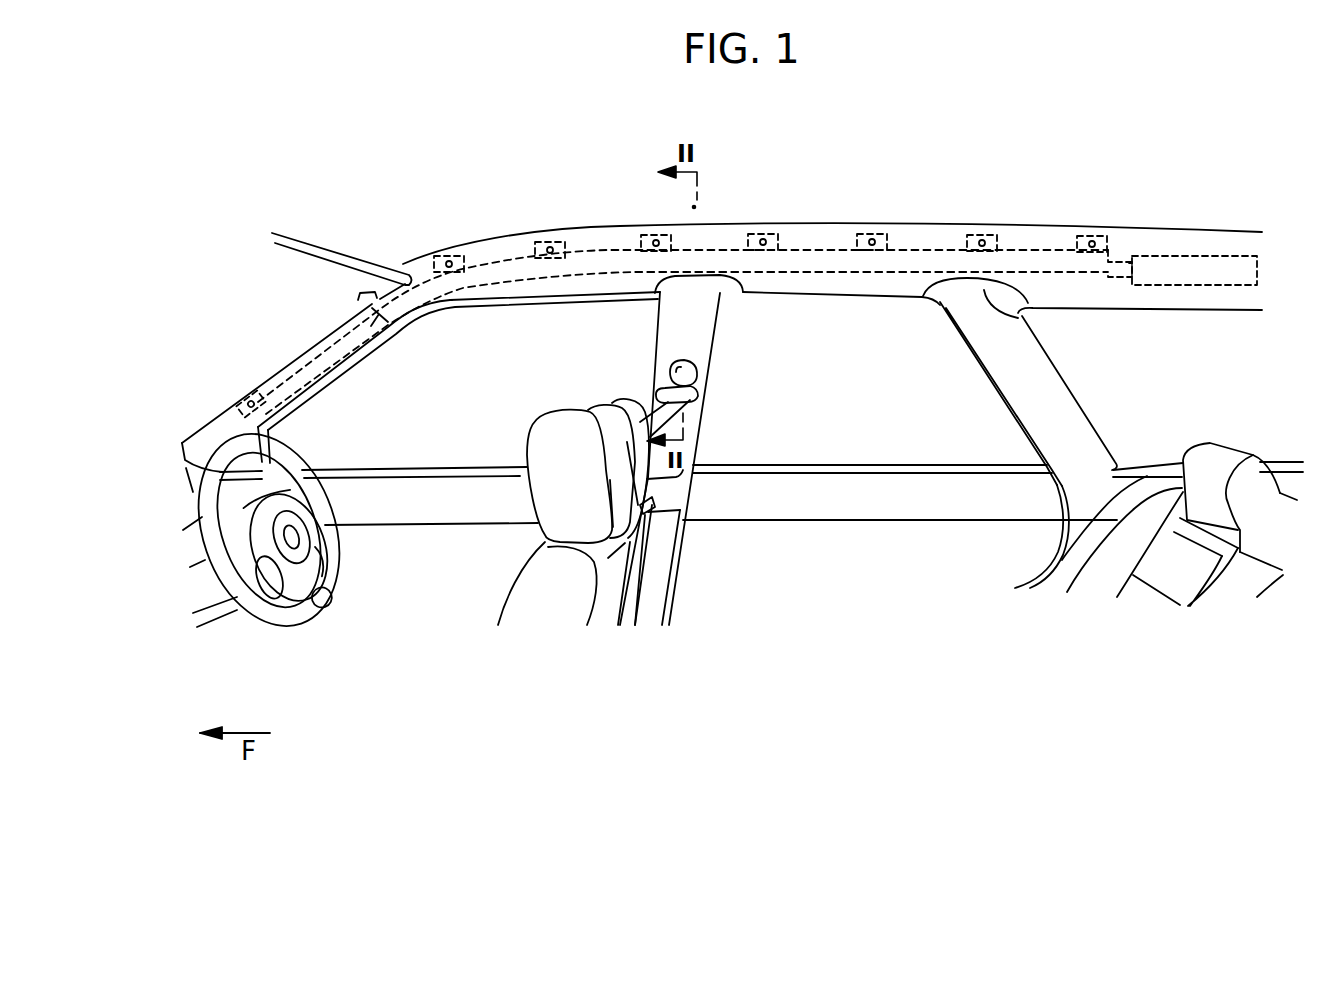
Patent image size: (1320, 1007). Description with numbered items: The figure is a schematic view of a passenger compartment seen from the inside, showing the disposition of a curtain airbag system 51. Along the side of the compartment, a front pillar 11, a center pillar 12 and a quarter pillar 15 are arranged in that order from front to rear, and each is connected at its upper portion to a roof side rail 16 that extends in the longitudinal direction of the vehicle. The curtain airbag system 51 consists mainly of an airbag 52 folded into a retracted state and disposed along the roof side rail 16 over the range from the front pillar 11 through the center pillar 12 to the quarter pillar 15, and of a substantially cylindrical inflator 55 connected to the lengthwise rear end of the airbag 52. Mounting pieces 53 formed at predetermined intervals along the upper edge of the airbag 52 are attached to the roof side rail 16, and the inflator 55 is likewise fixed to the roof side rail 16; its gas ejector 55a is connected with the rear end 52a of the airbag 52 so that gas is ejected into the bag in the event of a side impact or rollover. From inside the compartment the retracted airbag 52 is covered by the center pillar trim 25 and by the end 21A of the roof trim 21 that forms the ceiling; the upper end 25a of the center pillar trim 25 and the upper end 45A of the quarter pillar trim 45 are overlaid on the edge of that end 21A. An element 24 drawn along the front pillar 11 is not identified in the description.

The front pillar 11 is at (290, 356).
The center pillar 12 is at (648, 347).
The quarter pillar 15 is at (1000, 395).
The roof side rail 16 is at (497, 300).
The roof trim 21 is at (793, 233).
The end of the roof trim 21A is at (867, 287).
The front pillar garnish 24 is at (333, 331).
The center pillar trim 25 is at (707, 333).
The upper end of the upper end of the center pillar trim 25a is at (697, 281).
The quarter pillar trim 45 is at (1052, 390).
The upper end of the quarter pillar trim 45A is at (1018, 318).
The curtain airbag system 51 is at (828, 249).
The airbag 52 is at (610, 249).
The rear end of the airbag 52a is at (1117, 256).
The mounting pieces 53 is at (456, 250).
The inflator 55 is at (1231, 255).
The gas ejector 55a is at (1133, 265).